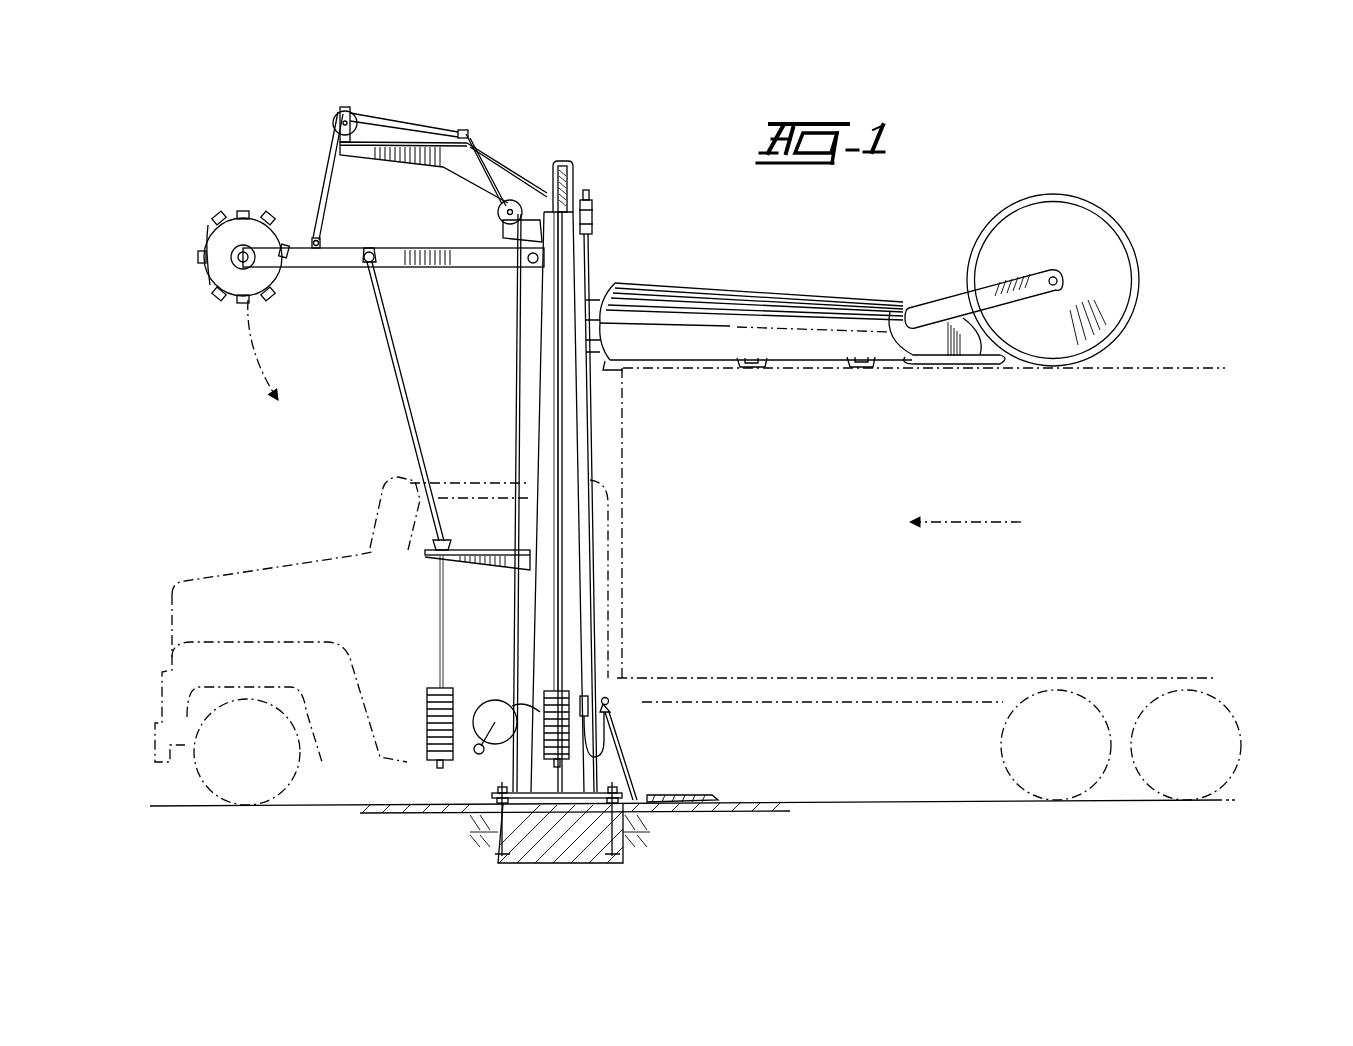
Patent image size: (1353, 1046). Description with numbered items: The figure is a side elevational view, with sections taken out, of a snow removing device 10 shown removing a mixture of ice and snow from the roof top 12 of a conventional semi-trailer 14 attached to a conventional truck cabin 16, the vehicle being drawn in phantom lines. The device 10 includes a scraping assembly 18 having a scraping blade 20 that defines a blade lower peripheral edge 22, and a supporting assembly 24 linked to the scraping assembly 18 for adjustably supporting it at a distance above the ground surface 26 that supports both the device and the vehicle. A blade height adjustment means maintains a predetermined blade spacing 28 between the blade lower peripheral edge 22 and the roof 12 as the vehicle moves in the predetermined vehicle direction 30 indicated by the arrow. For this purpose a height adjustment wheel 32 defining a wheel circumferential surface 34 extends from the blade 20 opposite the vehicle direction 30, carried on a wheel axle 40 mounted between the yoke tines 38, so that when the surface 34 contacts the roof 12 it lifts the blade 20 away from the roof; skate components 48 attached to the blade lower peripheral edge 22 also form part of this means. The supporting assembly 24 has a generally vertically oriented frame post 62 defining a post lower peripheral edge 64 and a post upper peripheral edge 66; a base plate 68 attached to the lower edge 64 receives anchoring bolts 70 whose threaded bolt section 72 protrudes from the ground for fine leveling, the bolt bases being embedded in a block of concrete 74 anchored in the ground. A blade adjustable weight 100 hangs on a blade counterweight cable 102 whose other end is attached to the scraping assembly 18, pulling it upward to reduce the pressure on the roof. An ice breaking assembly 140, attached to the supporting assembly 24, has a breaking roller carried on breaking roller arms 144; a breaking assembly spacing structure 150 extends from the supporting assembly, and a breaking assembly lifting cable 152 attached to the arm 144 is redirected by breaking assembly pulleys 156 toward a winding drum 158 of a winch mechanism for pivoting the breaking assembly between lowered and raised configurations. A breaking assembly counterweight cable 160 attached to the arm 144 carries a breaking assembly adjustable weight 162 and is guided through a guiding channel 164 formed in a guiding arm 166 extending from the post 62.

The snow removing device 10 is at (494, 113).
The roof top 12 is at (1160, 366).
The semi-trailer 14 is at (1202, 488).
The truck cabin 16 is at (274, 536).
The scraping assembly 18 is at (800, 260).
The scraping blade 20 is at (692, 320).
The blade lower peripheral edge 22 is at (795, 366).
The supporting assembly 24 is at (492, 352).
The ground surface 26 is at (790, 802).
The predetermined blade spacing 28 is at (606, 372).
The predetermined vehicle direction 30 is at (985, 520).
The height adjustment wheel 32 is at (1093, 250).
The wheel circumferential surface 34 is at (1138, 278).
The yoke tines 38 is at (975, 298).
The wheel axle 40 is at (1065, 274).
The skate components 48 is at (756, 368).
The frame posts 62 is at (572, 283).
The post lower peripheral edge 64 is at (502, 772).
The post upper peripheral edge 66 is at (598, 216).
The base plate 68 is at (592, 772).
The anchoring bolts 70 is at (498, 842).
The threaded bolt section 72 is at (600, 782).
The block of concrete 74 is at (638, 830).
The blade adjustable weight 100 is at (606, 722).
The blade counterweight cable 102 is at (598, 665).
The ice breaking assembly 140 is at (263, 196).
The breaking roller arms 144 is at (345, 262).
The breaking assembly spacing structure 150 is at (447, 165).
The breaking assembly lifting cable 152 is at (315, 195).
The breaking assembly pulleys 156 is at (350, 114).
The winding drum 158 is at (560, 688).
The breaking assembly counterweight cable 160 is at (400, 403).
The breaking assembly adjustable weight 162 is at (425, 728).
The guiding channel 164 is at (427, 555).
The guiding arm 166 is at (472, 540).